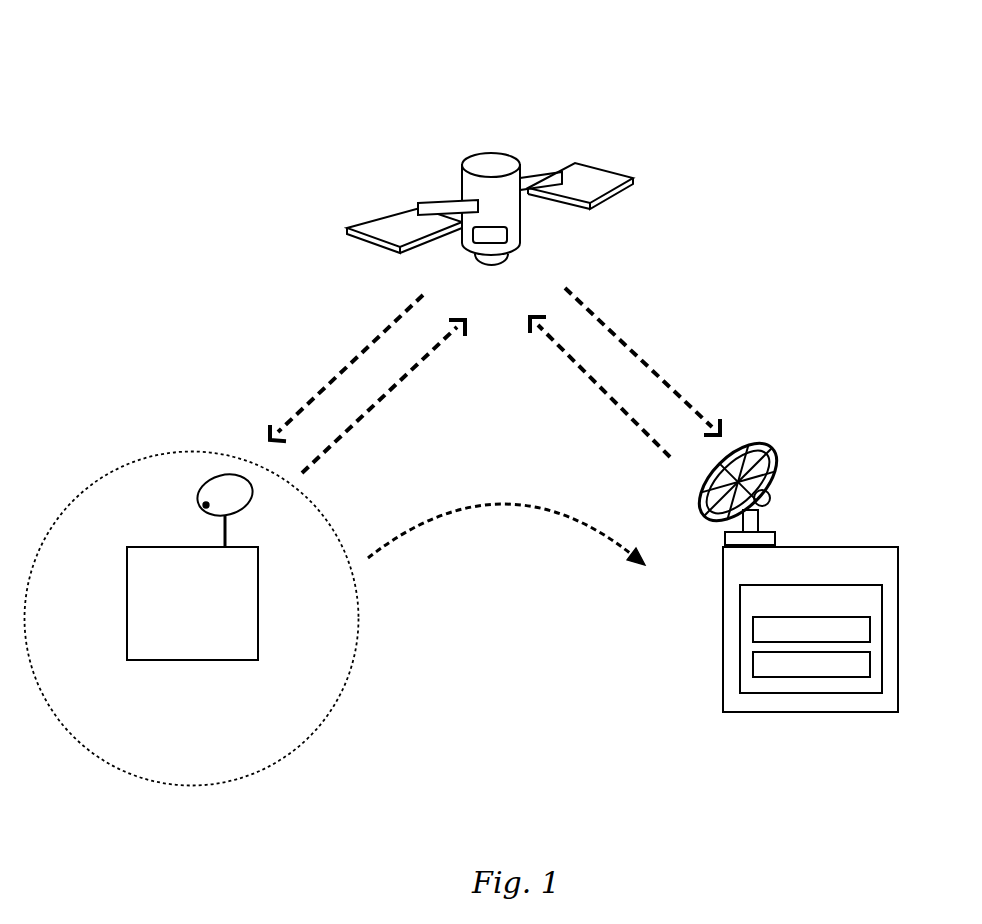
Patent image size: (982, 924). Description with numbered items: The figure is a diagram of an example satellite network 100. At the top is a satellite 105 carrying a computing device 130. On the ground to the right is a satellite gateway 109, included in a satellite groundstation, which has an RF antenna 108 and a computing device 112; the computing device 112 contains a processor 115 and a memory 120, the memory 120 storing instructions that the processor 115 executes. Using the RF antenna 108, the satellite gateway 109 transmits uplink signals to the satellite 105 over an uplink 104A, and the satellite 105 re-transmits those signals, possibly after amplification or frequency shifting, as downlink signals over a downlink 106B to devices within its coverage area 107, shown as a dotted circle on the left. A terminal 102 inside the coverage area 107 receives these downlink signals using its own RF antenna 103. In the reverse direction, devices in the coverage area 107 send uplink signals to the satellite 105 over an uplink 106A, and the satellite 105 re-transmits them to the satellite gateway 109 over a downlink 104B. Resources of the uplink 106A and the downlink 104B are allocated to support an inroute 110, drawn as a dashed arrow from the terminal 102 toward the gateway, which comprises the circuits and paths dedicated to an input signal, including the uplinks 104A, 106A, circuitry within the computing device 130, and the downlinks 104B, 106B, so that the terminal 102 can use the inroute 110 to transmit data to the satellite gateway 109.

The satellite network 100 is at (528, 31).
The terminal 102 is at (171, 628).
The RF antenna 103 is at (255, 492).
The uplink 104A is at (622, 405).
The downlink 104B is at (608, 330).
The satellite 105 is at (521, 165).
The uplink 106A is at (365, 413).
The downlink 106B is at (382, 338).
The coverage area 107 is at (155, 457).
The RF antenna 108 is at (774, 505).
The satellite gateway 109 is at (791, 574).
The inroute 110 is at (552, 510).
The computing device 112 is at (791, 612).
The processor 115 is at (791, 640).
The memory 120 is at (791, 675).
The computing device 130 is at (508, 236).